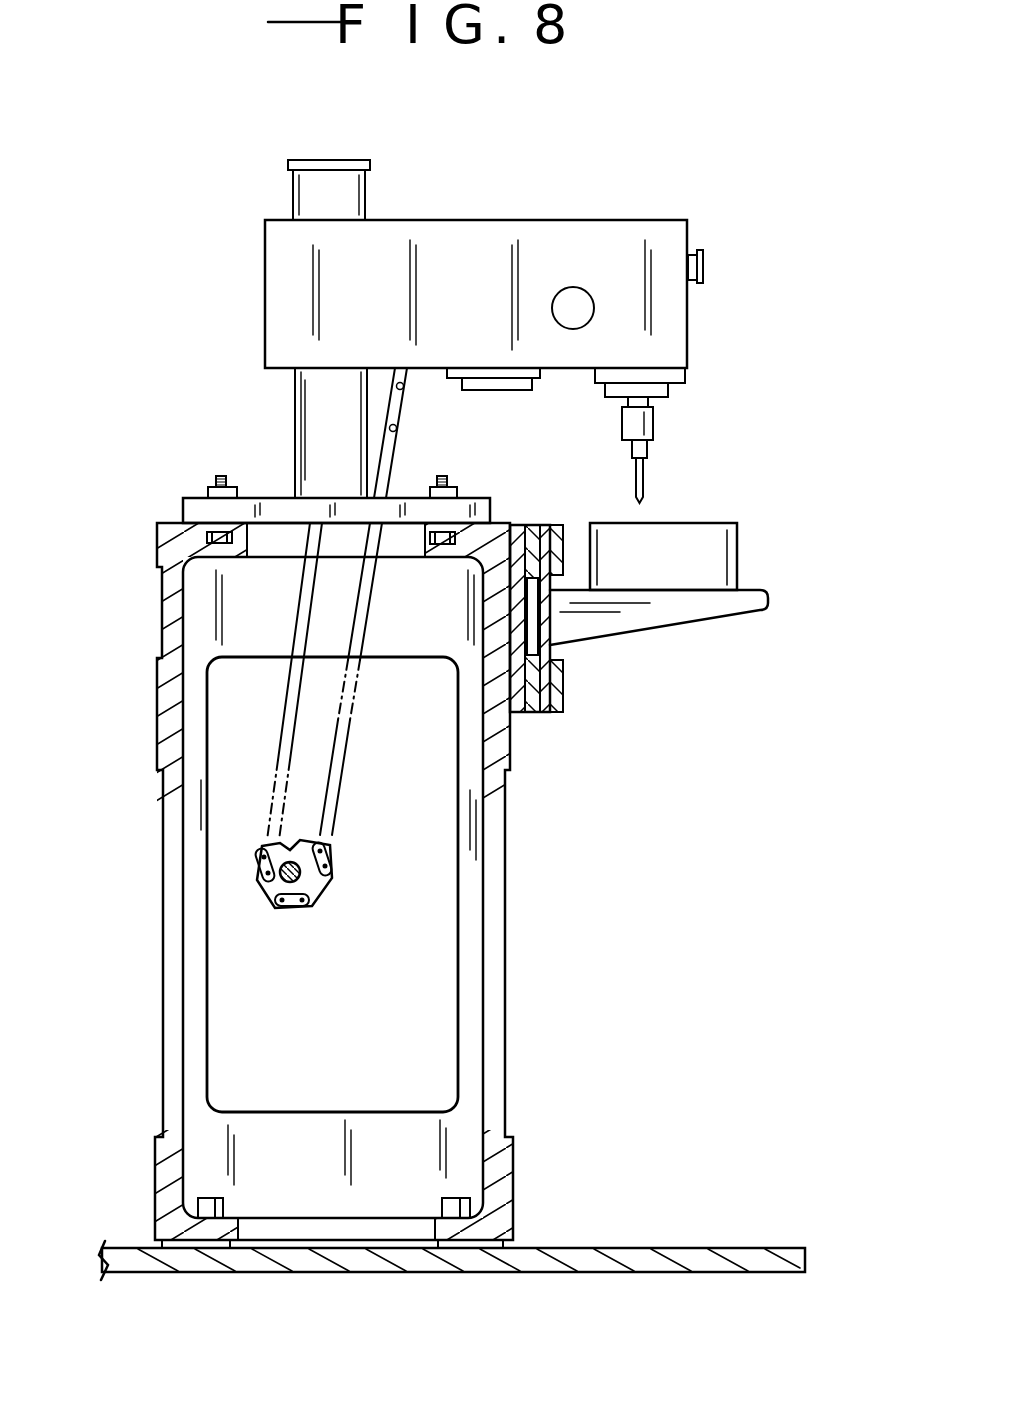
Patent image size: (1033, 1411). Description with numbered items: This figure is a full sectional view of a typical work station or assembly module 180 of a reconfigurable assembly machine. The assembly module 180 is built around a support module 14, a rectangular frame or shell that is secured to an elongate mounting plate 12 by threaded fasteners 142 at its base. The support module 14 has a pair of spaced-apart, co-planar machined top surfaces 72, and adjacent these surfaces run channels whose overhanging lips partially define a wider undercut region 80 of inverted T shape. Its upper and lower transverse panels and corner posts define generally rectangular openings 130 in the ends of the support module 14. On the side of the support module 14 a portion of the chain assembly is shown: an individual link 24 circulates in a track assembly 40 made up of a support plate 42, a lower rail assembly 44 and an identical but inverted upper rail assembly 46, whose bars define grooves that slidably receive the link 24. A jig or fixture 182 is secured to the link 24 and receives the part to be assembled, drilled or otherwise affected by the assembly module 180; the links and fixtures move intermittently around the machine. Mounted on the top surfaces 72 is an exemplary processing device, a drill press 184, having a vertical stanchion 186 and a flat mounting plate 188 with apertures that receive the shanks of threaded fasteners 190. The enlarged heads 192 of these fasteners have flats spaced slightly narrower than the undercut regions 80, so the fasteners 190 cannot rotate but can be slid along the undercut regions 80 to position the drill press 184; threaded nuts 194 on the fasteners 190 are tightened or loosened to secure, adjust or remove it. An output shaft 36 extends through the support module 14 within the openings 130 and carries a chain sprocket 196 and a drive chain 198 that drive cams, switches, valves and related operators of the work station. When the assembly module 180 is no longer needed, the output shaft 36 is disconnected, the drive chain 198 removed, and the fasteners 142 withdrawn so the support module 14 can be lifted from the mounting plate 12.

The mounting plate 12 is at (652, 1248).
The support module 14 is at (125, 670).
The link 24 is at (555, 625).
The output shaft 36 is at (300, 870).
The track assembly 40 is at (556, 507).
The support plate 42 is at (513, 522).
The lower rail assembly 44 is at (547, 720).
The upper rail assembly 46 is at (580, 515).
The top surfaces 72 is at (173, 520).
The undercut region 80 is at (220, 557).
The openings 130 is at (358, 996).
The threaded fasteners 142 is at (452, 1207).
The assembly module 180 is at (387, 324).
The jig or fixture 182 is at (752, 570).
The drill press 184 is at (570, 240).
The vertical stanchion 186 is at (292, 185).
The mounting plate 188 is at (275, 510).
The threaded fasteners 190 is at (215, 535).
The enlarged heads 192 is at (218, 476).
The threaded nuts 194 is at (238, 497).
The chain sprocket 196 is at (300, 832).
The drive chain 198 is at (353, 730).